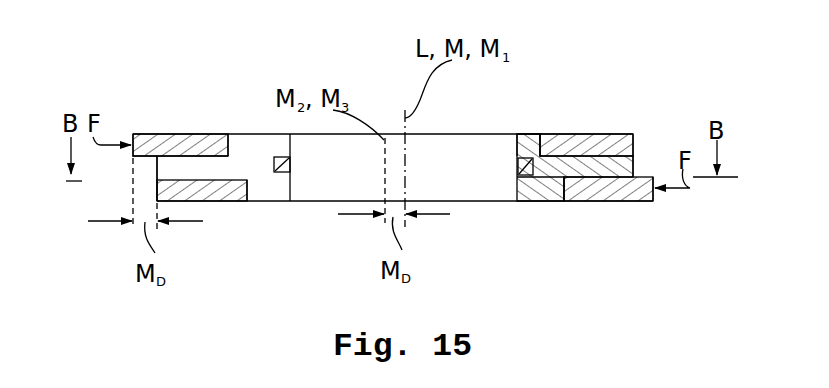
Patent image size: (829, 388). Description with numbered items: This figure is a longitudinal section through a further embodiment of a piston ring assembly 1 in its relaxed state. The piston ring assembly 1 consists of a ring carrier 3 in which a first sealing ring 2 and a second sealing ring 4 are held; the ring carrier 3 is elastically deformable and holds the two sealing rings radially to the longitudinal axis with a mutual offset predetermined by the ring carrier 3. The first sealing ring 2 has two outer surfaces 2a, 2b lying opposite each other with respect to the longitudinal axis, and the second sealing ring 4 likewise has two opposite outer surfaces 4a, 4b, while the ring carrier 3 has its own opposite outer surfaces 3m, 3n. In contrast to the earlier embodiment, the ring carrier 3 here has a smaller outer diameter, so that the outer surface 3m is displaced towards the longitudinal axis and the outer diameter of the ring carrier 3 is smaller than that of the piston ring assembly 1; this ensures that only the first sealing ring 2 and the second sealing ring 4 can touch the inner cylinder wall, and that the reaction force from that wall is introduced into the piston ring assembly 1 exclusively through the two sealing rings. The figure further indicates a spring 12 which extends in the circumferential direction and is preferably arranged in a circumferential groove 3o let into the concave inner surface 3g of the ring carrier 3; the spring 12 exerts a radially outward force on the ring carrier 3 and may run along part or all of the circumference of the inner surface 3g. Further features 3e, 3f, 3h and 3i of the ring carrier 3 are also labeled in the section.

The piston ring assembly 1 is at (729, 87).
The first sealing ring 2 is at (610, 190).
The outer surface of the first sealing ring 2a is at (155, 195).
The outer surface of the first sealing ring 2b is at (656, 200).
The ring carrier 3 is at (518, 190).
The inner surface of intermediate member 3e is at (270, 186).
The first end portion of intermediate member 3f is at (530, 146).
The concave inner surface of the ring carrier 3g is at (516, 143).
The shoulder of intermediate member 3h is at (541, 141).
The step surface of intermediate member 3i is at (566, 188).
The outer surface of the ring carrier 3m is at (656, 161).
The outer surface of the ring carrier 3n is at (155, 168).
The groove 3o is at (279, 157).
The second sealing ring 4 is at (580, 143).
The outer surface of the second sealing ring 4a is at (635, 133).
The outer surface of the second sealing ring 4b is at (131, 132).
The spring 12 is at (290, 173).